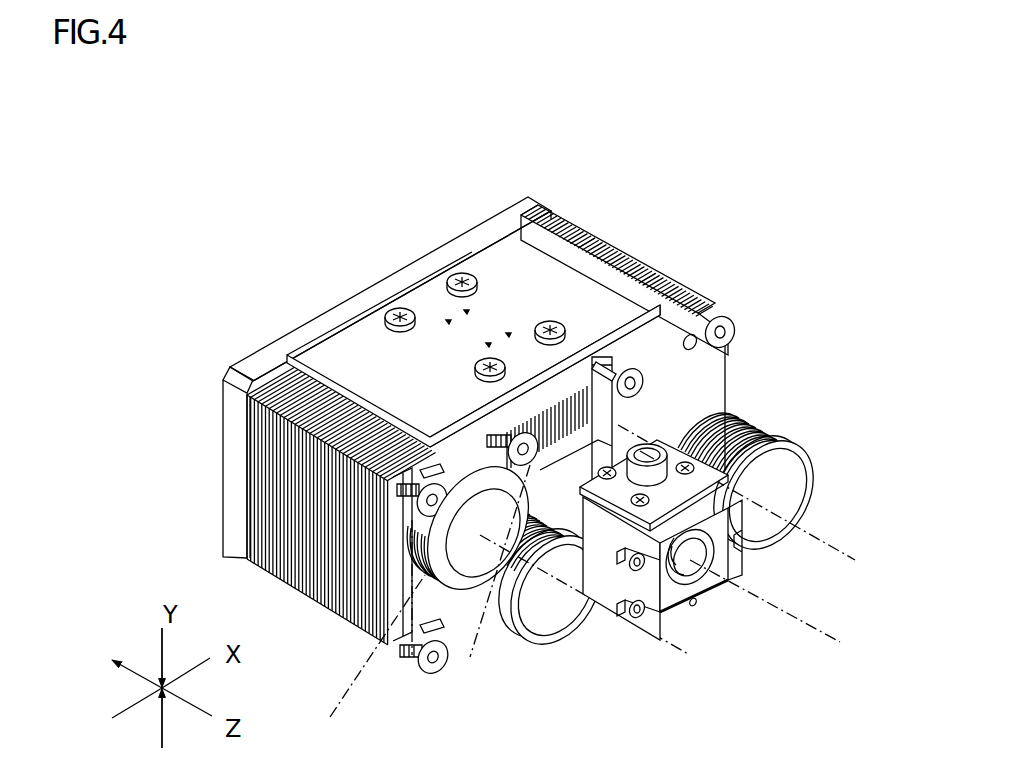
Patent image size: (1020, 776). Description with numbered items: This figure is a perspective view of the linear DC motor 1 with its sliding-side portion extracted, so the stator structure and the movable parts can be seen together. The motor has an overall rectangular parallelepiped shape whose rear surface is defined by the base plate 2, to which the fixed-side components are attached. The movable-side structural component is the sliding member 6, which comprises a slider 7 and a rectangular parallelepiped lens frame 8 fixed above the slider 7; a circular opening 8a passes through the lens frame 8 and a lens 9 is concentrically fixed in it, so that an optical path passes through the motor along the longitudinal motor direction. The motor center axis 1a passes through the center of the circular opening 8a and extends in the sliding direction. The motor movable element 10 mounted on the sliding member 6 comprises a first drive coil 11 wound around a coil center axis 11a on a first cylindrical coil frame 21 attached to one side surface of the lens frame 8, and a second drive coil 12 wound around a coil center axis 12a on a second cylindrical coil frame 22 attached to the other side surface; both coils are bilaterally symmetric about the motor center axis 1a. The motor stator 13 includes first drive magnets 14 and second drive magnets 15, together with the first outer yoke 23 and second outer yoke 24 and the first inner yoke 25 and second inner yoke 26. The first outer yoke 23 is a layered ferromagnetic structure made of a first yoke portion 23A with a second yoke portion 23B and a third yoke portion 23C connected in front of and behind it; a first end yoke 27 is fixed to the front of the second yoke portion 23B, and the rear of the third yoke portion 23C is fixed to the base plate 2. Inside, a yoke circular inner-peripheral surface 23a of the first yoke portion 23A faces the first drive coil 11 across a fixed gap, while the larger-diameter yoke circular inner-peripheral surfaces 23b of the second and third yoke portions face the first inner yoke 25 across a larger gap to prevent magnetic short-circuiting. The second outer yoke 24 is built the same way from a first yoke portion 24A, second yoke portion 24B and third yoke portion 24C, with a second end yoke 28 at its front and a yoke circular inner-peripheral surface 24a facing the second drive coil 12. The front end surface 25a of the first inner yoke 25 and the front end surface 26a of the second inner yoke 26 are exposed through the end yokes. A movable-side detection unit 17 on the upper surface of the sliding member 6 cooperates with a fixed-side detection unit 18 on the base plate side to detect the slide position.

The linear DC motor 1 is at (345, 255).
The motor center axis 1a is at (828, 630).
The base plate 2 is at (376, 389).
The sliding member 6 is at (711, 520).
The slider 7 is at (715, 602).
The lens frame 8 is at (746, 573).
The circular opening 8a is at (716, 562).
The lens 9 is at (683, 558).
The motor movable element 10 is at (777, 469).
The first drive coil 11 is at (530, 568).
The coil center axis 11a is at (684, 650).
The second drive coil 12 is at (790, 433).
The coil center axis 12a is at (840, 553).
The motor stator 13 is at (535, 197).
The first drive magnets 14 is at (402, 580).
The second drive magnets 15 is at (562, 447).
The movable-side detection unit 17 is at (592, 463).
The fixed-side detection unit 18 is at (493, 275).
The first cylindrical coil frame 21 is at (574, 652).
The second cylindrical coil frame 22 is at (810, 467).
The first outer yoke 23 is at (264, 506).
The first yoke portion 23A is at (308, 497).
The second yoke portion 23B is at (371, 537).
The third yoke portion 23C is at (245, 452).
The yoke circular inner-peripheral surface 23a is at (414, 580).
The yoke circular inner-peripheral surfaces 23b is at (456, 592).
The second outer yoke 24 is at (622, 226).
The first yoke portion 24A is at (623, 249).
The second yoke portion 24B is at (676, 256).
The third yoke portion 24C is at (573, 215).
The yoke circular inner-peripheral surface 24a is at (582, 411).
The first inner yoke 25 is at (478, 598).
The front end surface 25a is at (450, 592).
The second inner yoke 26 is at (732, 325).
The front end surface 26a is at (665, 445).
The first end yoke 27 is at (421, 606).
The second end yoke 28 is at (718, 301).